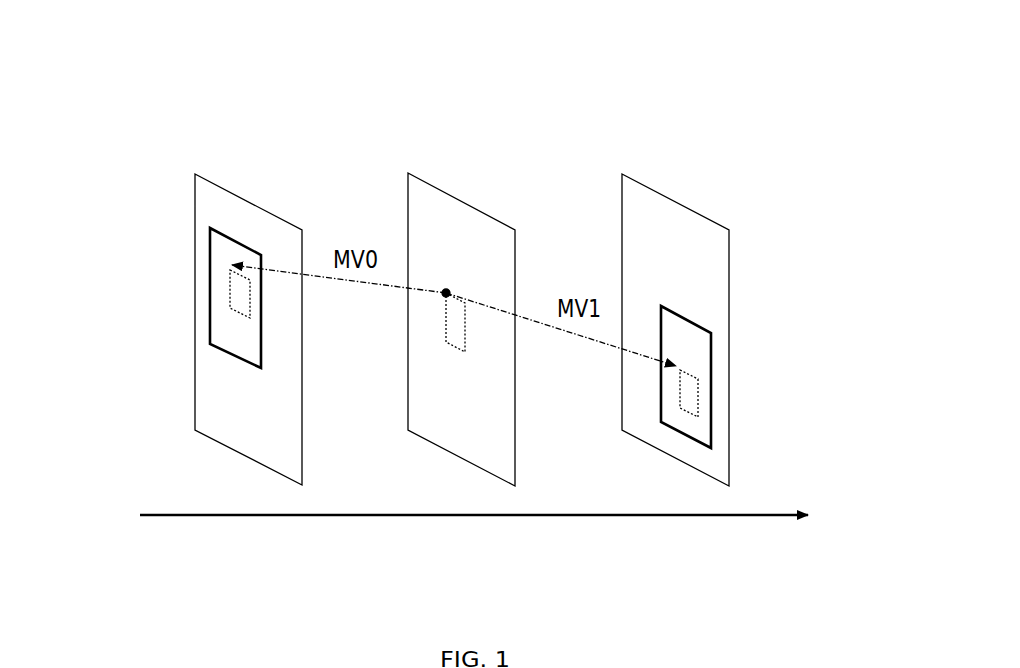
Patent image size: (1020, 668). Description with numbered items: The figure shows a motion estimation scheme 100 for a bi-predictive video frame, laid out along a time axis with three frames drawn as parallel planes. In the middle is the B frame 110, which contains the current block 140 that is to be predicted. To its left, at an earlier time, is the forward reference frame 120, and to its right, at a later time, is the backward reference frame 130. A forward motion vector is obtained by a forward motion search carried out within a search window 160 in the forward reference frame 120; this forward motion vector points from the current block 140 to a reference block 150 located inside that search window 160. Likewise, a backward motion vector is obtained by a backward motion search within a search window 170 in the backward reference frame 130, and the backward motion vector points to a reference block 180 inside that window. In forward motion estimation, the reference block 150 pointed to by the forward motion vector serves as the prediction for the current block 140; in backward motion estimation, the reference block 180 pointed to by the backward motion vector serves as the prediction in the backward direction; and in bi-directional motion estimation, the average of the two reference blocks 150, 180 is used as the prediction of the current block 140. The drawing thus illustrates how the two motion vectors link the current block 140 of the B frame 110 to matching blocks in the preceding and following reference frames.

The motion estimation scheme 100 is at (720, 99).
The B frame 110 is at (510, 202).
The forward reference frame 120 is at (254, 202).
The backward reference frame 130 is at (713, 220).
The current block 140 is at (455, 347).
The reference block 150 is at (230, 292).
The search window 160 is at (224, 362).
The search window 170 is at (713, 355).
The reference block 180 is at (693, 423).